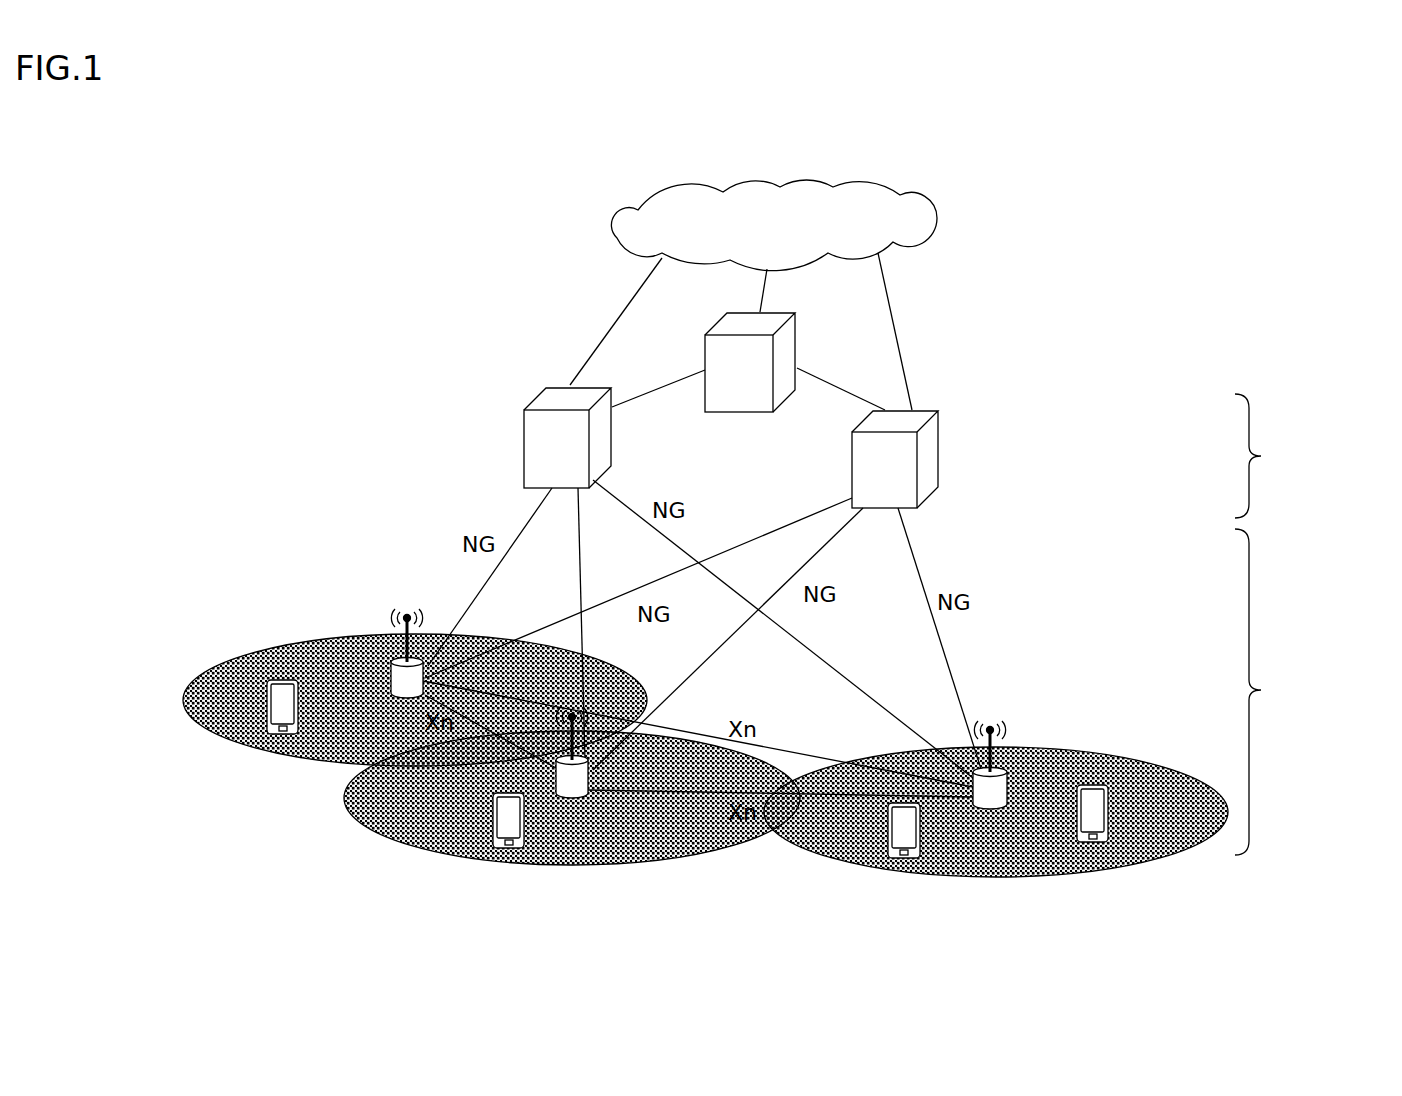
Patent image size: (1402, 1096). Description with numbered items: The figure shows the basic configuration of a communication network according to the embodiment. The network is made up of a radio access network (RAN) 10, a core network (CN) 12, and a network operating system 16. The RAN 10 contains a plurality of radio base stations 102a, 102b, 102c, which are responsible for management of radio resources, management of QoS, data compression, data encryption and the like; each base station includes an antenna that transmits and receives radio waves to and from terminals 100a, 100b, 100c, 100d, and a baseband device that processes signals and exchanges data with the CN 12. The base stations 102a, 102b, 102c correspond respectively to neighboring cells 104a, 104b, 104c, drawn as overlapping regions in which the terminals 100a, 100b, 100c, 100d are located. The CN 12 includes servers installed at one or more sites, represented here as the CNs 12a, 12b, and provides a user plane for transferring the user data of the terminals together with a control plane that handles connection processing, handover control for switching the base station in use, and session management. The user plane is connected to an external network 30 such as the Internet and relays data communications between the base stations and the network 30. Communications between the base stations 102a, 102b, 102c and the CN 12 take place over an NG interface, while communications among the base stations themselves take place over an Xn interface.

The external network 30 is at (918, 192).
The network operating system 16 is at (718, 325).
The CN 12a is at (524, 436).
The CN 12b is at (938, 452).
The core network 12 is at (1296, 456).
The radio access network 10 is at (1304, 692).
The radio base station 102a is at (392, 663).
The radio base station 102b is at (585, 797).
The radio base station 102c is at (1007, 777).
The terminal 100a is at (267, 733).
The terminal 100b is at (510, 848).
The terminal 100c is at (902, 858).
The terminal 100d is at (1090, 842).
The cell 104a is at (216, 660).
The cell 104b is at (402, 845).
The cell 104c is at (1165, 858).